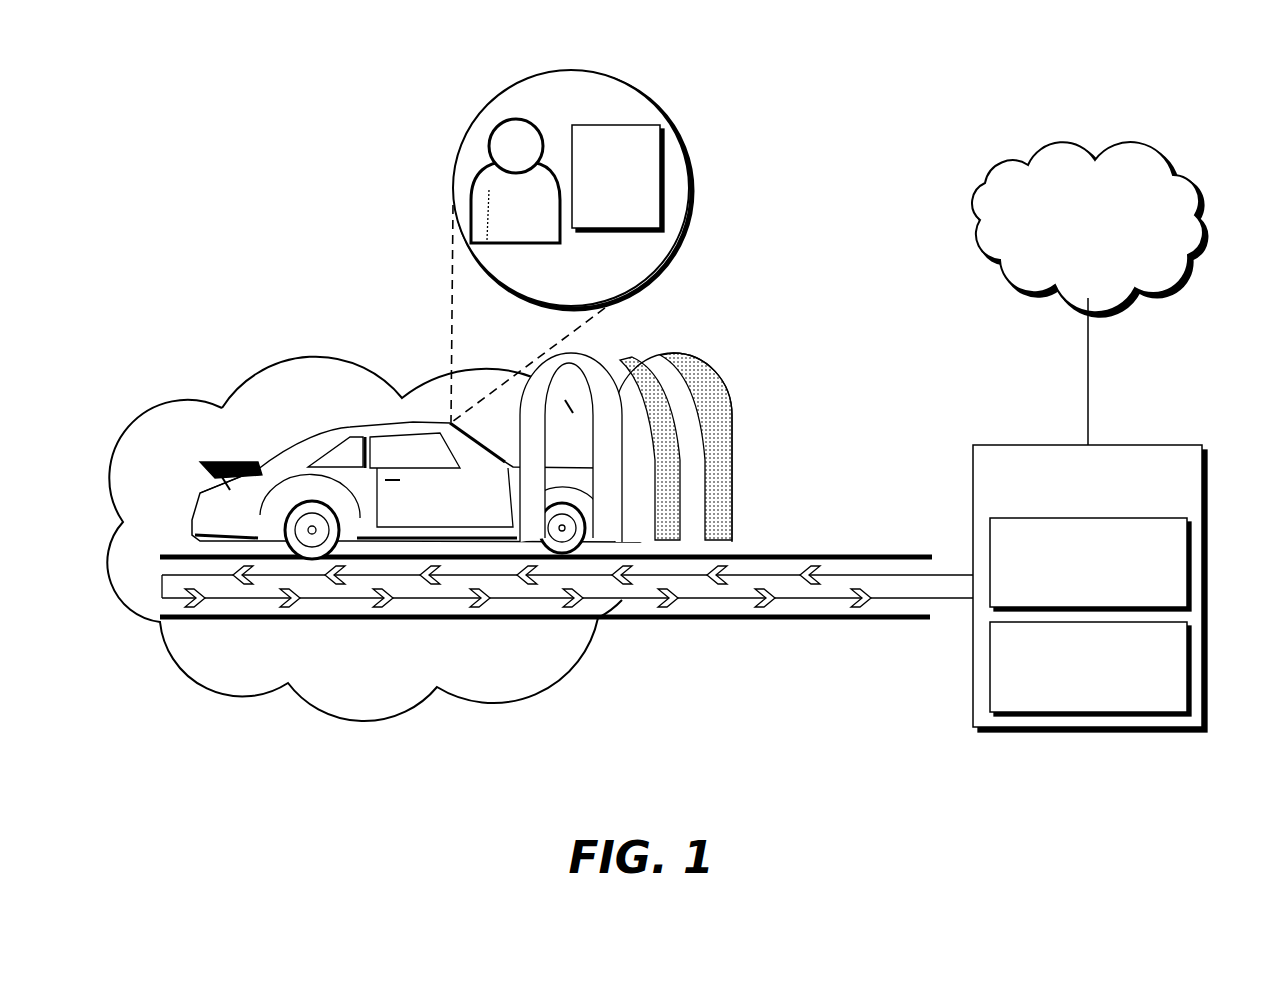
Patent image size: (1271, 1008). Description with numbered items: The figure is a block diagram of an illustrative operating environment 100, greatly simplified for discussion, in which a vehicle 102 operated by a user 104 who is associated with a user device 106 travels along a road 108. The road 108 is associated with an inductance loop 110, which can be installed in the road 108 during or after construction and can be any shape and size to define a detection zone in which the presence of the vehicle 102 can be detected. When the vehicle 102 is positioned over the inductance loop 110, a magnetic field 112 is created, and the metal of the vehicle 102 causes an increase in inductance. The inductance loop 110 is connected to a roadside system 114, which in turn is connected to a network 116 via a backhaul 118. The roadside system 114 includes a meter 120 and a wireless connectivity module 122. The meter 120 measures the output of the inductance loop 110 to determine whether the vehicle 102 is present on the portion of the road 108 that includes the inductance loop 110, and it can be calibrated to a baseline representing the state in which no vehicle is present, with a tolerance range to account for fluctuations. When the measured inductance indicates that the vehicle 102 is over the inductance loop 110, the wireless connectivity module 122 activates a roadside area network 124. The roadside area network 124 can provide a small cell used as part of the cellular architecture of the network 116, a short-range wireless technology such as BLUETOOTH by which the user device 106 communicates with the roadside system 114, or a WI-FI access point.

The operating environment 100 is at (187, 119).
The vehicle 102 is at (213, 487).
The user 104 is at (515, 181).
The user device 106 is at (618, 178).
The road 108 is at (846, 552).
The inductance loop 110 is at (937, 603).
The magnetic field 112 is at (644, 343).
The roadside system 114 is at (1090, 588).
The network 116 is at (1089, 229).
The backhaul 118 is at (1088, 372).
The meter 120 is at (1090, 564).
The wireless connectivity module 122 is at (1090, 669).
The roadside area network 124 is at (364, 539).